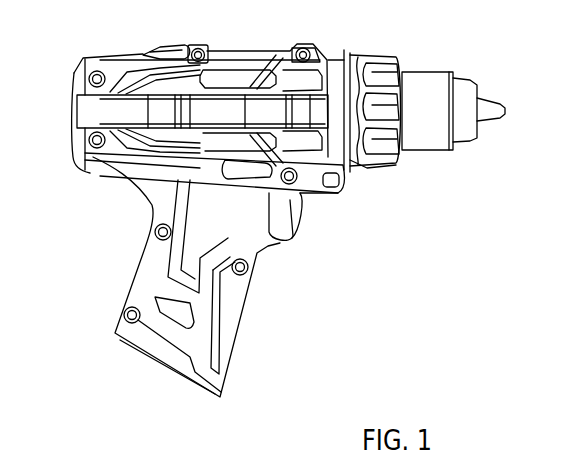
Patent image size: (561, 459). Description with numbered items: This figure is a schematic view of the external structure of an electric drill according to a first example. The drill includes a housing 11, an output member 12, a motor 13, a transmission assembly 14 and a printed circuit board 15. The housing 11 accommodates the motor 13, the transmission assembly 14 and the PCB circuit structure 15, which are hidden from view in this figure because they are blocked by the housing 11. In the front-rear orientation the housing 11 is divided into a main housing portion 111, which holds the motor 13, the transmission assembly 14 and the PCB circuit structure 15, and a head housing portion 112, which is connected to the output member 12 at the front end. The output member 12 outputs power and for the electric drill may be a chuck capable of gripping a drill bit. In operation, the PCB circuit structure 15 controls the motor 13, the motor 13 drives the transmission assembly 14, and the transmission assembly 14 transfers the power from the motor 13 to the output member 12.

The housing 11 is at (84, 118).
The main housing portion 111 is at (128, 152).
The head housing portion 112 is at (438, 90).
The output member 12 is at (478, 101).
The motor 13 is at (276, 54).
The transmission assembly 14 is at (346, 153).
The printed circuit board (PCB) 15 is at (185, 46).